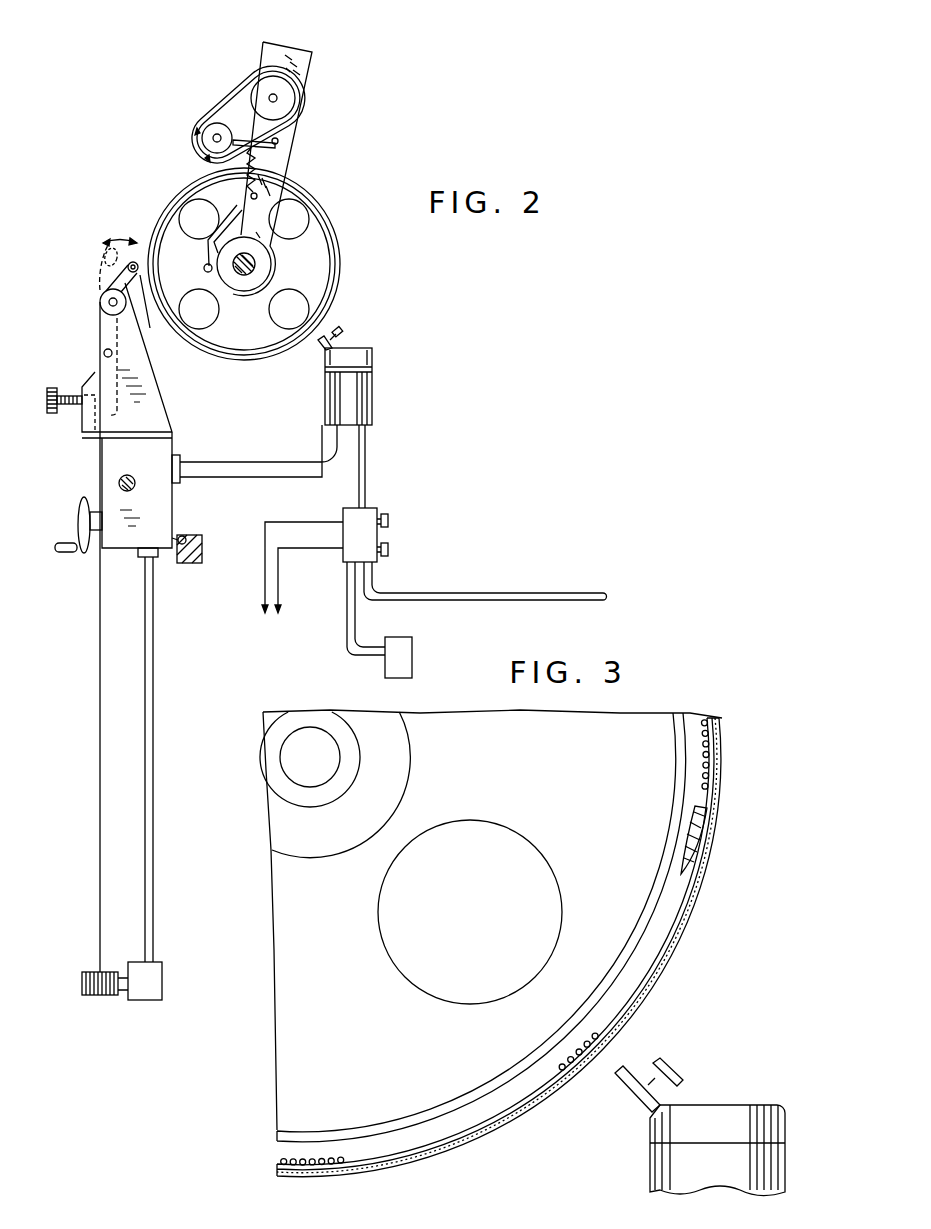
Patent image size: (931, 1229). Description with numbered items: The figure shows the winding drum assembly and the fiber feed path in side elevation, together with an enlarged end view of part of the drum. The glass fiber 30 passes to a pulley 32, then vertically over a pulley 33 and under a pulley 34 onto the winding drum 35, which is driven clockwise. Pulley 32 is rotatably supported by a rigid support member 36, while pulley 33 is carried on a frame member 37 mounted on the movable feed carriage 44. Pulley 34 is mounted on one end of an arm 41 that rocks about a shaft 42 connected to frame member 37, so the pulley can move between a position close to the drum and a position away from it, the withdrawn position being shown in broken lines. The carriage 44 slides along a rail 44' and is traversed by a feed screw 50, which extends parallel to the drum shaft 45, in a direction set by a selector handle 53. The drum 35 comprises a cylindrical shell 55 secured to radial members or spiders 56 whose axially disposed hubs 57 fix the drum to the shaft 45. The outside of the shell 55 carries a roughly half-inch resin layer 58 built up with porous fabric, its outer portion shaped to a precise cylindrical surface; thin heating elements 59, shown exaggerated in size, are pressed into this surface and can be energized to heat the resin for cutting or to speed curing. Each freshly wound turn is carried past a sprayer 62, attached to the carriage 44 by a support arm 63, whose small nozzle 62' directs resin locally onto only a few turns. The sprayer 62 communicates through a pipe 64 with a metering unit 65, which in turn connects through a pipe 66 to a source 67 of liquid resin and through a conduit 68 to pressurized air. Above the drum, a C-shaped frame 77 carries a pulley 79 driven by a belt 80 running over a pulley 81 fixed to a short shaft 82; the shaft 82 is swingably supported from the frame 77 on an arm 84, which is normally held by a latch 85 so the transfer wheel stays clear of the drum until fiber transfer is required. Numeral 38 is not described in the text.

In FIG. 2, the glass fiber 30 is at (98, 680).
In FIG. 3, the glass fiber 30 is at (714, 851).
In FIG. 2, the pulley 32 is at (108, 998).
In FIG. 2, the pulley 33 is at (102, 295).
In FIG. 2, the pulley 34 is at (118, 316).
In FIG. 2, the winding drum 35 is at (150, 207).
In FIG. 3, the winding drum 35 is at (727, 742).
In FIG. 2, the rigid support member 36 is at (155, 695).
In FIG. 2, the frame member 37 is at (143, 375).
In FIG. 2, the adjusting screw 38 is at (53, 388).
In FIG. 2, the arm 41 is at (147, 310).
In FIG. 2, the shaft 42 is at (139, 267).
In FIG. 2, the feed carriage 44 is at (142, 497).
In FIG. 2, the rail 44' is at (203, 568).
In FIG. 2, the shaft 45 is at (242, 278).
In FIG. 3, the shaft 45 is at (308, 743).
In FIG. 2, the feed screw 50 is at (122, 480).
In FIG. 2, the selector handle 53 is at (186, 538).
In FIG. 3, the cylindrical shell 55 is at (668, 828).
In FIG. 2, the radial members or spiders 56 is at (318, 250).
In FIG. 3, the radial members or spiders 56 is at (285, 925).
In FIG. 2, the hubs 57 is at (259, 266).
In FIG. 3, the hubs 57 is at (348, 732).
In FIG. 3, the resin layer 58 is at (513, 1097).
In FIG. 3, the heating elements 59 is at (702, 790).
In FIG. 2, the sprayer 62 is at (374, 386).
In FIG. 3, the sprayer 62 is at (690, 1150).
In FIG. 2, the nozzle 62' is at (345, 321).
In FIG. 3, the nozzle 62' is at (649, 1066).
In FIG. 2, the support arm 63 is at (252, 472).
In FIG. 2, the pipe 64 is at (370, 468).
In FIG. 2, the metering unit 65 is at (353, 523).
In FIG. 2, the pipe 66 is at (346, 590).
In FIG. 2, the source of liquid resin 67 is at (410, 652).
In FIG. 2, the conduit 68 is at (488, 592).
In FIG. 2, the C-shaped frame 77 is at (280, 62).
In FIG. 2, the pulley 79 is at (285, 97).
In FIG. 2, the belt 80 is at (236, 100).
In FIG. 2, the pulley 81 is at (208, 146).
In FIG. 2, the short shaft 82 is at (214, 135).
In FIG. 2, the arm 84 is at (277, 146).
In FIG. 2, the latch 85 is at (277, 138).